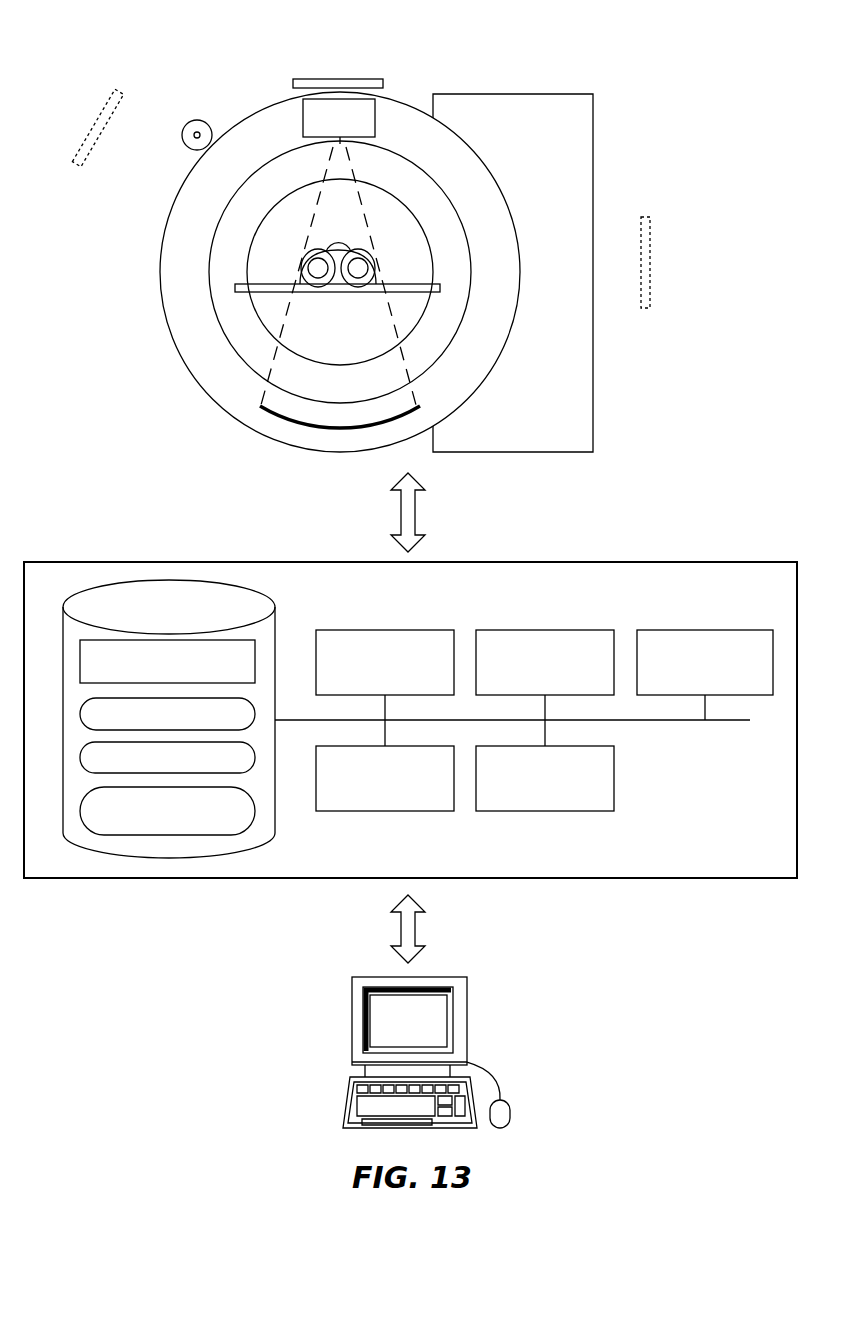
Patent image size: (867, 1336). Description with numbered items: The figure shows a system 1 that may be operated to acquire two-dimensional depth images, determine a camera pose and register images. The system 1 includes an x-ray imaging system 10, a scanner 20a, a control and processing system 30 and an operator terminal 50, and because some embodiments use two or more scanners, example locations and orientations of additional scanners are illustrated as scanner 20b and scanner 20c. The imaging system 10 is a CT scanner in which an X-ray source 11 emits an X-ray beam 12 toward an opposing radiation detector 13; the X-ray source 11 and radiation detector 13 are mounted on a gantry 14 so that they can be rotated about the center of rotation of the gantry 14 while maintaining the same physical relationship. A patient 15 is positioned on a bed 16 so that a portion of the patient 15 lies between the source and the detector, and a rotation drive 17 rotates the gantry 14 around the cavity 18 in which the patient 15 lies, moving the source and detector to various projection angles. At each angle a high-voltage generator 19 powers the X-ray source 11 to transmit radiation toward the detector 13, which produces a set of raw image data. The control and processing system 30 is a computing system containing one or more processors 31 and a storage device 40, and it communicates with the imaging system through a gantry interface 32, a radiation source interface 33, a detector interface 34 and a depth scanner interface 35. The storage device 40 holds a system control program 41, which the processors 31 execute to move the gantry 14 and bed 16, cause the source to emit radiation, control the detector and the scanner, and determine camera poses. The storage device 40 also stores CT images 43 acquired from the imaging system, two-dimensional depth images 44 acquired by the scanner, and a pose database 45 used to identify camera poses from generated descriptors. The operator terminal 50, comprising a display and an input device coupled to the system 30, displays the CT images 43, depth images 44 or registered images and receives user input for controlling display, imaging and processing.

The system 1 is at (141, 43).
The x-ray imaging system 10 is at (264, 69).
The X-ray source 11 is at (303, 131).
The X-ray beam 12 is at (350, 173).
The radiation detector 13 is at (318, 430).
The gantry 14 is at (391, 101).
The patient 15 is at (360, 255).
The bed 16 is at (330, 292).
The rotation drive 17 is at (182, 133).
The cavity 18 is at (256, 248).
The high-voltage generator 19 is at (594, 114).
The scanner 20a is at (352, 79).
The scanner 20b is at (82, 151).
The scanner 20c is at (649, 262).
The control and processing system 30 is at (651, 562).
The processors 31 is at (416, 746).
The gantry interface 32 is at (416, 630).
The radiation source interface 33 is at (579, 630).
The detector interface 34 is at (579, 746).
The depth scanner interface 35 is at (740, 630).
The storage device 40 is at (250, 598).
The system control program 41 is at (80, 661).
The CT images 43 is at (80, 713).
The two-dimensional depth images 44 is at (80, 757).
The pose database 45 is at (80, 808).
The operator terminal 50 is at (503, 1032).